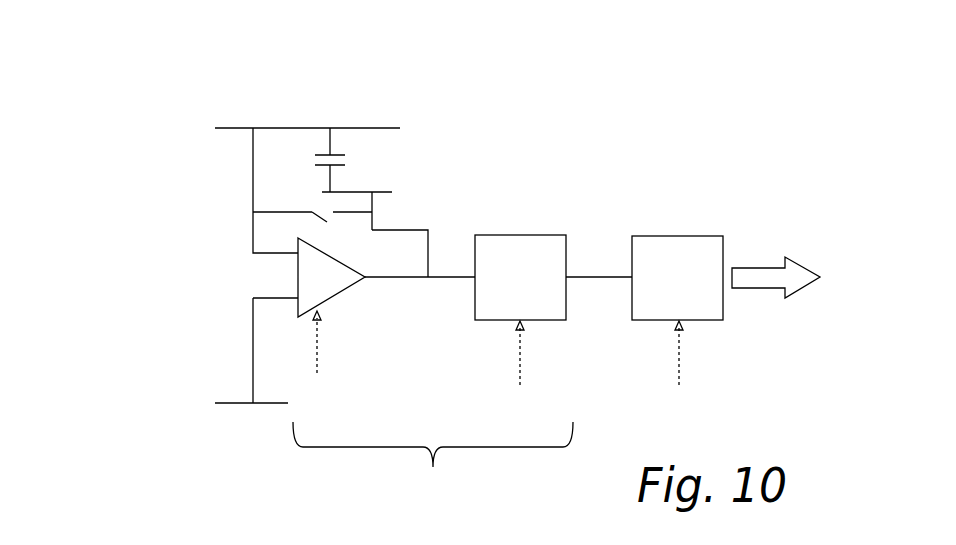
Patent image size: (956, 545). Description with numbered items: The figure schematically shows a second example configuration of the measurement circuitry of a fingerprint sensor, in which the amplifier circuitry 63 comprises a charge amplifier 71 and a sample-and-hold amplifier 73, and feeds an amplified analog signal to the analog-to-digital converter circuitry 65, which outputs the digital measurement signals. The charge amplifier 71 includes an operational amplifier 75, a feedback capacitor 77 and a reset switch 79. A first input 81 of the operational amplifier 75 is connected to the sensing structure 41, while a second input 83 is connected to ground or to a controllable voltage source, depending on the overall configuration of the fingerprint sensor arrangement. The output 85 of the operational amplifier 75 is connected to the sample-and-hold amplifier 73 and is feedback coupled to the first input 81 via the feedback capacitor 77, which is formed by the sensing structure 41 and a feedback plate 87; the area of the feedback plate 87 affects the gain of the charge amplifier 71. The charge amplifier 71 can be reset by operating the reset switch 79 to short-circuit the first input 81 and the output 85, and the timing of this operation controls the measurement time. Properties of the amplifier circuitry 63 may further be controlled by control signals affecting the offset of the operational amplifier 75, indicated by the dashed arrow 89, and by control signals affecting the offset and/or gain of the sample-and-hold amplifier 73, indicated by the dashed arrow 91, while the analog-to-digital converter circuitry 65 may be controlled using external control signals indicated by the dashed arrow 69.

The sensing structure 41 is at (330, 128).
The feedback capacitor 77 is at (364, 161).
The reset switch 79 is at (323, 208).
The feedback plate 87 is at (386, 192).
The operational amplifier 75 is at (327, 252).
The charge amplifier 71 is at (372, 305).
The output 85 is at (365, 277).
The first input 81 is at (298, 247).
The second input 83 is at (298, 303).
The dashed arrow 89 is at (317, 352).
The sample-and-hold amplifier 73 is at (526, 226).
The dashed arrow 91 is at (520, 368).
The analog-to-digital converter circuitry 65 is at (675, 236).
The dashed arrow 69 is at (679, 368).
The amplifier circuitry 63 is at (433, 463).